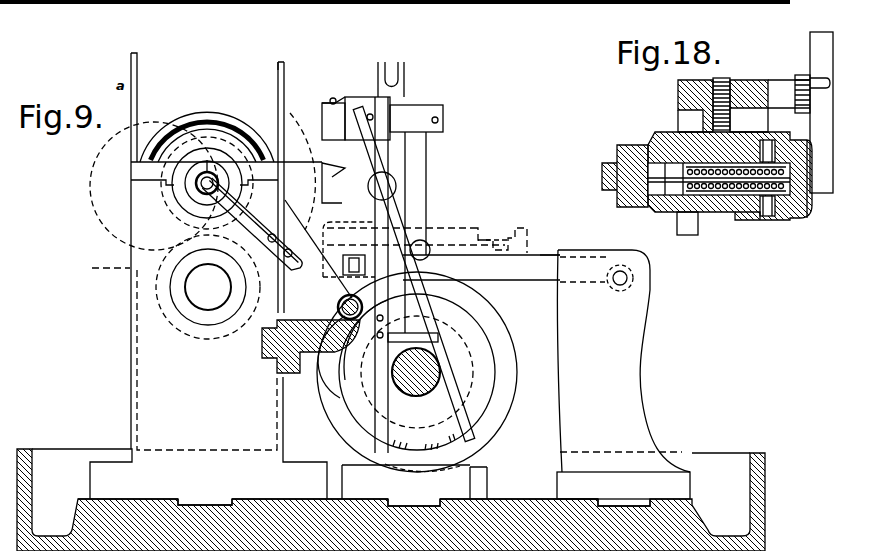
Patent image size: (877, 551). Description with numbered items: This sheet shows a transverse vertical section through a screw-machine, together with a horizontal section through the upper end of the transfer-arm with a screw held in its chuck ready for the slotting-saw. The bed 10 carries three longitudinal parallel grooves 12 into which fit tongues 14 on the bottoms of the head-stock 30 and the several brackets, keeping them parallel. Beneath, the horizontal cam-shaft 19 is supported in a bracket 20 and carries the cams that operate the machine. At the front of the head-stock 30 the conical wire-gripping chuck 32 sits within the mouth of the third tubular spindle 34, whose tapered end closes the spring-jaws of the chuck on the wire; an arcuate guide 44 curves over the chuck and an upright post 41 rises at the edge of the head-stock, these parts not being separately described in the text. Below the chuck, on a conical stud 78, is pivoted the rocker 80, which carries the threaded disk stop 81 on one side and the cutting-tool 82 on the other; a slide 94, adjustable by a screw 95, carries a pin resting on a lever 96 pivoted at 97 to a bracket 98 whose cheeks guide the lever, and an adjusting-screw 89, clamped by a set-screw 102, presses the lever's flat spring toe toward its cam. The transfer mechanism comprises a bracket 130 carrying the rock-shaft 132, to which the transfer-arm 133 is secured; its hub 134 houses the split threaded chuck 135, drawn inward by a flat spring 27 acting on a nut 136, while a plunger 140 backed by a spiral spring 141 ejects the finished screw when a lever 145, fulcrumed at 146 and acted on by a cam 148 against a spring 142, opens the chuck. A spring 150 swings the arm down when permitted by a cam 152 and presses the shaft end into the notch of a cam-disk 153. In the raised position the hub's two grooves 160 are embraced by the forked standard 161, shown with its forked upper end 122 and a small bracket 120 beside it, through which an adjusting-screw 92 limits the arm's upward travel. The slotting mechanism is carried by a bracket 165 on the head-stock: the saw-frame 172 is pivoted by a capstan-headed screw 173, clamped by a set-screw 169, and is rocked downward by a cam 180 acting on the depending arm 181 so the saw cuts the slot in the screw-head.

In FIG. 9A, the bed 10 is at (391, 500).
In FIG. 9A, the longitudinal parallel grooves 12 is at (410, 502).
In FIG. 9A, the tongues 14 is at (192, 496).
In FIG. 9A, the cam-shaft 19 is at (416, 372).
In FIG. 9A, the bracket 20 is at (473, 467).
In FIG. 9A, the flat spring 27 is at (268, 233).
In FIG. 18, the flat spring 27 is at (770, 143).
In FIG. 9A, the head-stock 30 is at (406, 276).
In FIG. 9A, the wire-gripping chuck 32 is at (219, 168).
In FIG. 9A, the third tubular spindle 34 is at (203, 213).
In FIG. 9A, the post 41 is at (280, 66).
In FIG. 9A, the arcuate guide 44 is at (207, 113).
In FIG. 9A, the conical stud 78 is at (208, 287).
In FIG. 9A, the rocker 80 is at (498, 190).
In FIG. 9A, the disk stop 81 is at (88, 192).
In FIG. 9A, the cutting-tool 82 is at (322, 112).
In FIG. 9A, the adjusting-screw 89 is at (360, 247).
In FIG. 9A, the adjusting-screw 92 is at (374, 116).
In FIG. 18, the adjusting-screw 92 is at (677, 98).
In FIG. 9A, the slide 94 is at (508, 240).
In FIG. 9A, the screw 95 is at (530, 252).
In FIG. 9A, the lever 96 is at (538, 260).
In FIG. 9A, the pivot 97 is at (616, 286).
In FIG. 9A, the bracket 98 is at (623, 374).
In FIG. 9A, the set-screw 102 is at (362, 265).
In FIG. 9A, the bracket 120 is at (331, 110).
In FIG. 9A, the fork 122 is at (395, 78).
In FIG. 9A, the bracket 130 is at (300, 326).
In FIG. 9A, the rock-shaft 132 is at (326, 380).
In FIG. 9A, the transfer-arm 133 is at (380, 352).
In FIG. 18, the transfer-arm 133 is at (753, 222).
In FIG. 18, the hub 134 is at (713, 214).
In FIG. 18, the chuck 135 is at (640, 153).
In FIG. 9A, the nut 136 is at (196, 191).
In FIG. 18, the nut 136 is at (797, 212).
In FIG. 18, the plunger 140 is at (672, 200).
In FIG. 18, the spiral spring 141 is at (700, 228).
In FIG. 9A, the spring 142 is at (470, 333).
In FIG. 9A, the lever 145 is at (464, 400).
In FIG. 18, the lever 145 is at (810, 56).
In FIG. 9A, the fulcrum 146 is at (397, 186).
In FIG. 18, the fulcrum 146 is at (805, 76).
In FIG. 9A, the cam 148 is at (421, 446).
In FIG. 9A, the spring 150 is at (370, 372).
In FIG. 9A, the cam 152 is at (428, 245).
In FIG. 9A, the cam-disk 153 is at (518, 376).
In FIG. 18, the grooves 160 is at (677, 133).
In FIG. 9A, the standard 161 is at (384, 140).
In FIG. 18, the standard 161 is at (745, 80).
In FIG. 9A, the bracket 165 is at (349, 235).
In FIG. 9A, the set-screw 169 is at (336, 99).
In FIG. 9A, the saw-frame 172 is at (416, 112).
In FIG. 9A, the capstan-headed screw 173 is at (446, 120).
In FIG. 9A, the cam 180 is at (468, 356).
In FIG. 9A, the arm 181 is at (418, 172).